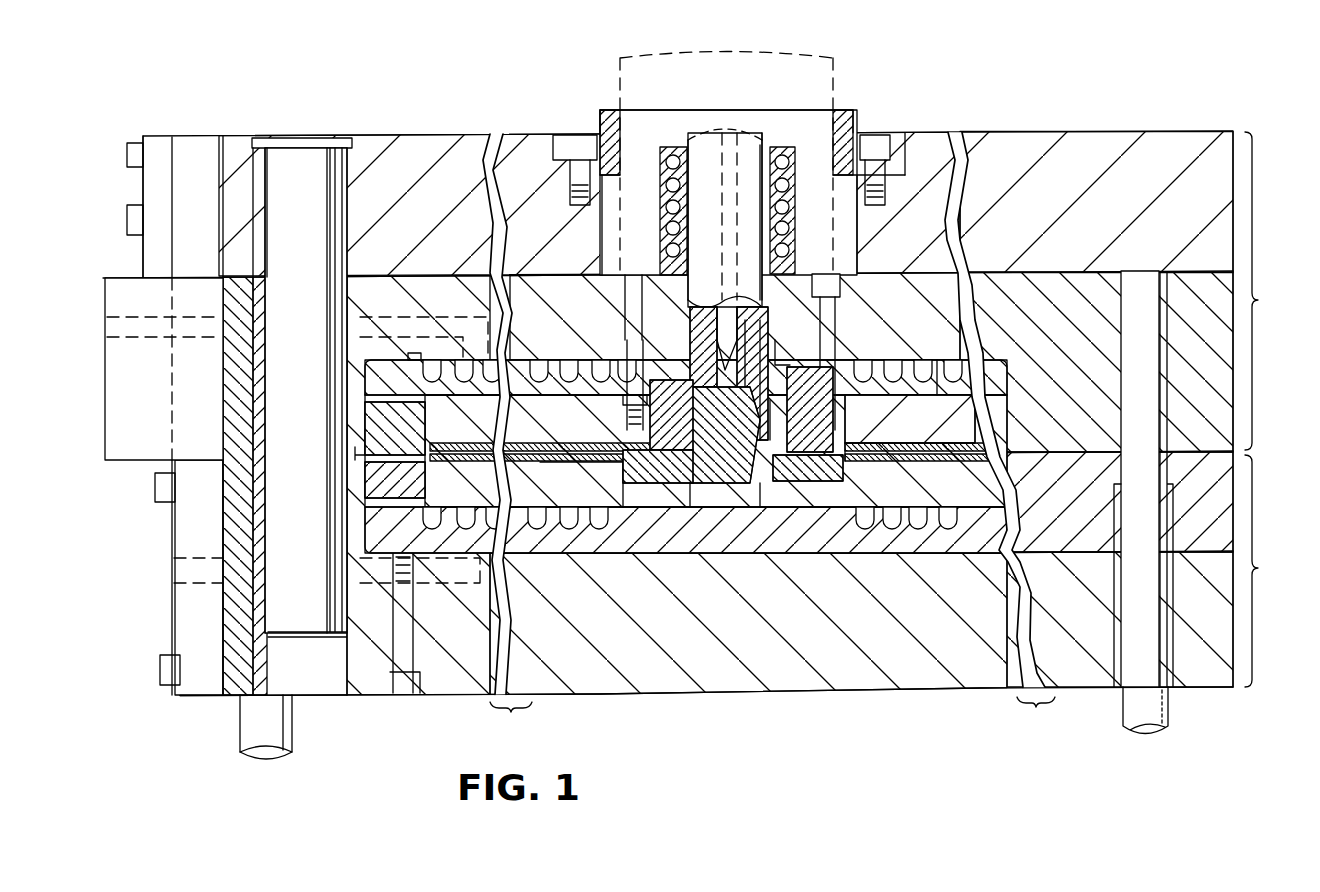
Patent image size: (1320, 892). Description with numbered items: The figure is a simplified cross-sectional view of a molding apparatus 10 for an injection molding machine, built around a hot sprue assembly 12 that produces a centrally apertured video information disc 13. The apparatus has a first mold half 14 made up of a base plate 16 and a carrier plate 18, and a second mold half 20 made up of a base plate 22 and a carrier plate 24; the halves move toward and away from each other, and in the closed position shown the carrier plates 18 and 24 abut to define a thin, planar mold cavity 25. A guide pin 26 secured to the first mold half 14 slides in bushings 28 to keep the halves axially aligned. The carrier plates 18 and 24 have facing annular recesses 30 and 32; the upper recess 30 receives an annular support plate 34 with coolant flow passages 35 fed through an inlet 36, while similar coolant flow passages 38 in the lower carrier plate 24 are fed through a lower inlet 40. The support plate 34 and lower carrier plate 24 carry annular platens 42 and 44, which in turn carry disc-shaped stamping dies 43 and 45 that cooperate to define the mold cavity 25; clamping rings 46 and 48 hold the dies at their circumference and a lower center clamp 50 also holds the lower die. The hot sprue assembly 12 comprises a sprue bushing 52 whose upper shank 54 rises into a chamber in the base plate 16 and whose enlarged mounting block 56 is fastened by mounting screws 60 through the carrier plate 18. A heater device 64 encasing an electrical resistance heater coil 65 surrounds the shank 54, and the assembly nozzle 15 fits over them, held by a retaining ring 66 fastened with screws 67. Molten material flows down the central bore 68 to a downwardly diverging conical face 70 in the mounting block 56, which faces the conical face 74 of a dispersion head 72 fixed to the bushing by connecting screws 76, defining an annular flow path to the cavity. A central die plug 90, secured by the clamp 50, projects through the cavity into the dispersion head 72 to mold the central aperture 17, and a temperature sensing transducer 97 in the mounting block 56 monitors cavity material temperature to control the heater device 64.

The molding apparatus 10 is at (375, 122).
The hot sprue assembly 12 is at (835, 236).
The video information disc 13 is at (905, 463).
The first mold half 14 is at (1272, 291).
The assembly nozzle 15 is at (838, 58).
The base plate 16 is at (1083, 132).
The central aperture 17 is at (770, 486).
The carrier plate 18 is at (1057, 283).
The second mold half 20 is at (1274, 571).
The base plate 22 is at (975, 683).
The carrier plate 24 is at (1067, 543).
The mold cavity 25 is at (590, 470).
The guide pins 26 is at (333, 200).
The bushings 28 is at (366, 273).
The recess 30 is at (868, 360).
The recess 32 is at (833, 490).
The support plate 34 is at (967, 378).
The flow passages 35 is at (955, 357).
The inlet 36 is at (205, 340).
The coolant flow passages 38 is at (600, 530).
The lower inlet 40 is at (205, 585).
The annular platen 42 is at (980, 418).
The stamping die 43 is at (458, 447).
The annular platen 44 is at (993, 479).
The stamping die 45 is at (447, 465).
The clamping ring 46 is at (415, 408).
The clamping ring 48 is at (410, 490).
The lower clamp 50 is at (652, 483).
The sprue bushing 52 is at (688, 286).
The upper shank 54 is at (695, 205).
The mounting block 56 is at (842, 410).
The mounting screws 60 is at (838, 302).
The heater device 64 is at (775, 150).
The electrical resistance heater coil 65 is at (778, 184).
The retaining ring 66 is at (895, 140).
The screws 67 is at (873, 137).
The central bore 68 is at (720, 128).
The conical face 70 is at (785, 400).
The dispersion head 72 is at (715, 483).
The conical face 74 is at (848, 440).
The connecting screws 76 is at (784, 360).
The central die plug 90 is at (740, 490).
The temperature sensing transducer 97 is at (635, 425).